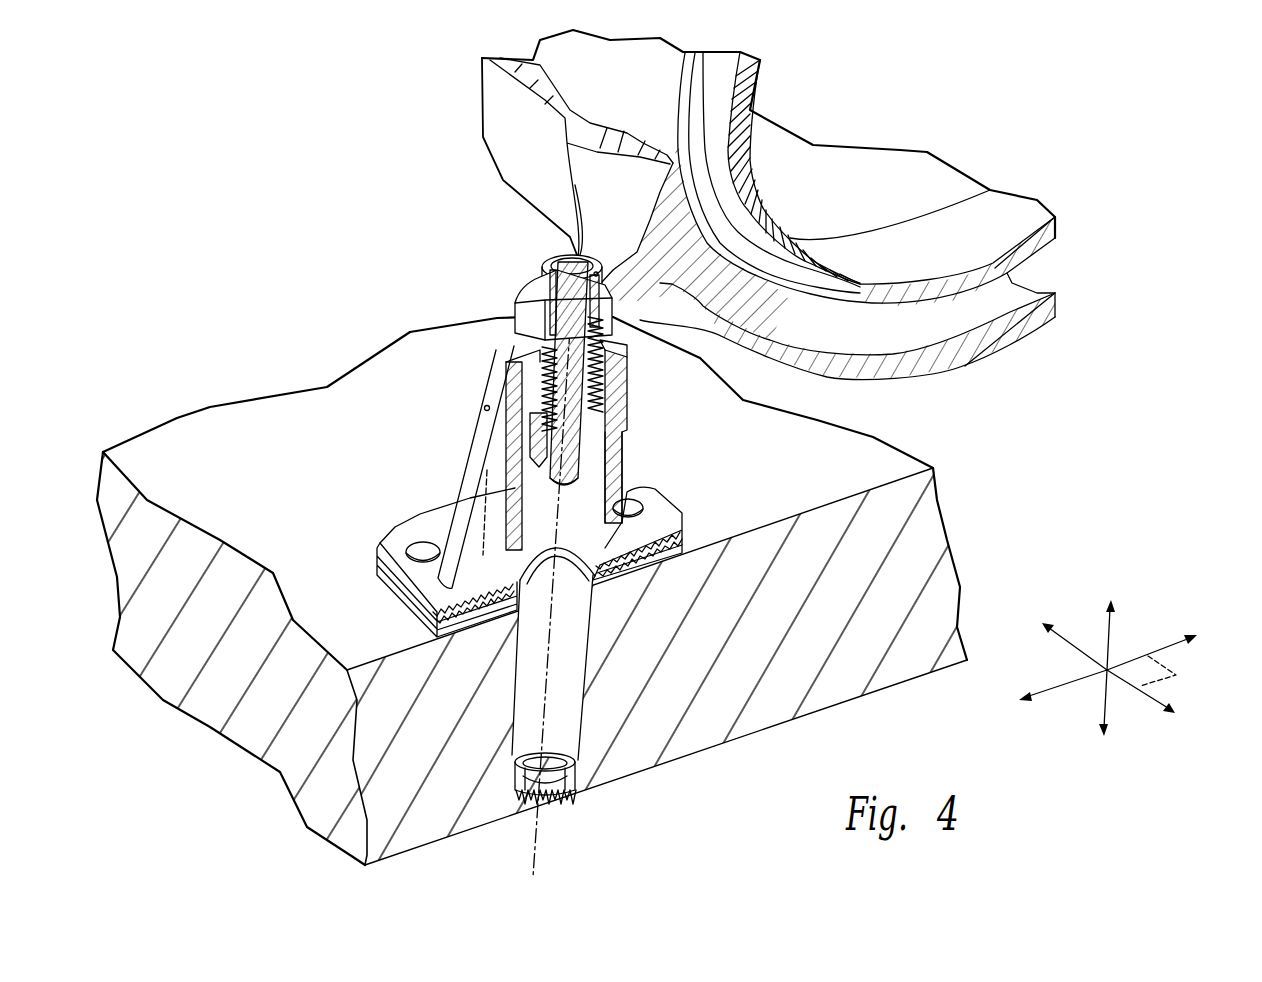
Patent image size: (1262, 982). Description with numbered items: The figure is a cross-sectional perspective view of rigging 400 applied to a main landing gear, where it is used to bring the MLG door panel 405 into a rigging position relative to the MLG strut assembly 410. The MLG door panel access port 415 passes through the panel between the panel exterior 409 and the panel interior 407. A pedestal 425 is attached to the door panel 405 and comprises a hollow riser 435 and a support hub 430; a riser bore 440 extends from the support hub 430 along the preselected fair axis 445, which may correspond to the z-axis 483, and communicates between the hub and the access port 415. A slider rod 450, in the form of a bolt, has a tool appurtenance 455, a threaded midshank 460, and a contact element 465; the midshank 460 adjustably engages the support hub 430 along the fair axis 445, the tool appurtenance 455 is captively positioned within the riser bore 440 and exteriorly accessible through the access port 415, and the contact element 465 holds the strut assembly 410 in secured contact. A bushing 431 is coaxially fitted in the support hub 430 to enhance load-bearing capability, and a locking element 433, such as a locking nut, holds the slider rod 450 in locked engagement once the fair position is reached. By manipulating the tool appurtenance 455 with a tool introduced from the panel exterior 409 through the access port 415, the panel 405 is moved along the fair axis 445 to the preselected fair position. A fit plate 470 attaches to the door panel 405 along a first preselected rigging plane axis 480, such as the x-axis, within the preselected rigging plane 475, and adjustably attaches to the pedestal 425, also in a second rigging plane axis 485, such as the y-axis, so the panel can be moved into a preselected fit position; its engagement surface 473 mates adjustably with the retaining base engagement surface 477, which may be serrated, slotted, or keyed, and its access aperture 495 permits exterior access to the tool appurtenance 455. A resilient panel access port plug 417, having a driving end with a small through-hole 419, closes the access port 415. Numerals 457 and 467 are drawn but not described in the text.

The rigging 400 is at (385, 486).
The MLG door panel 405 is at (800, 670).
The panel interior 407 is at (190, 447).
The panel exterior 409 is at (414, 847).
The MLG strut assembly 410 is at (695, 318).
The MLG door panel access port 415 is at (586, 697).
The panel access port plug 417 is at (558, 793).
The through-hole 419 is at (543, 807).
The pedestal 425 is at (478, 402).
The support hub 430 is at (618, 403).
The bushing 431 is at (500, 345).
The locking element 433 is at (612, 328).
The hollow riser 435 is at (622, 462).
The riser bore 440 is at (588, 486).
The preselected fair axis 445 is at (536, 858).
The slider rod 450 is at (590, 424).
The tool appurtenance 455 is at (547, 468).
The screw distal end 457 is at (567, 487).
The threaded midshank 460 is at (607, 386).
The contact element 465 is at (525, 308).
The cap 467 is at (565, 262).
The fit plate 470 is at (703, 538).
The engagement surface 473 is at (637, 553).
The preselected rigging plane 475 is at (1150, 670).
The retaining base engagement surface 477 is at (437, 613).
The first preselected rigging plane axis 480 is at (1048, 692).
The z-axis 483 is at (1110, 640).
The second rigging plane axis 485 is at (1068, 643).
The access aperture 495 is at (588, 583).